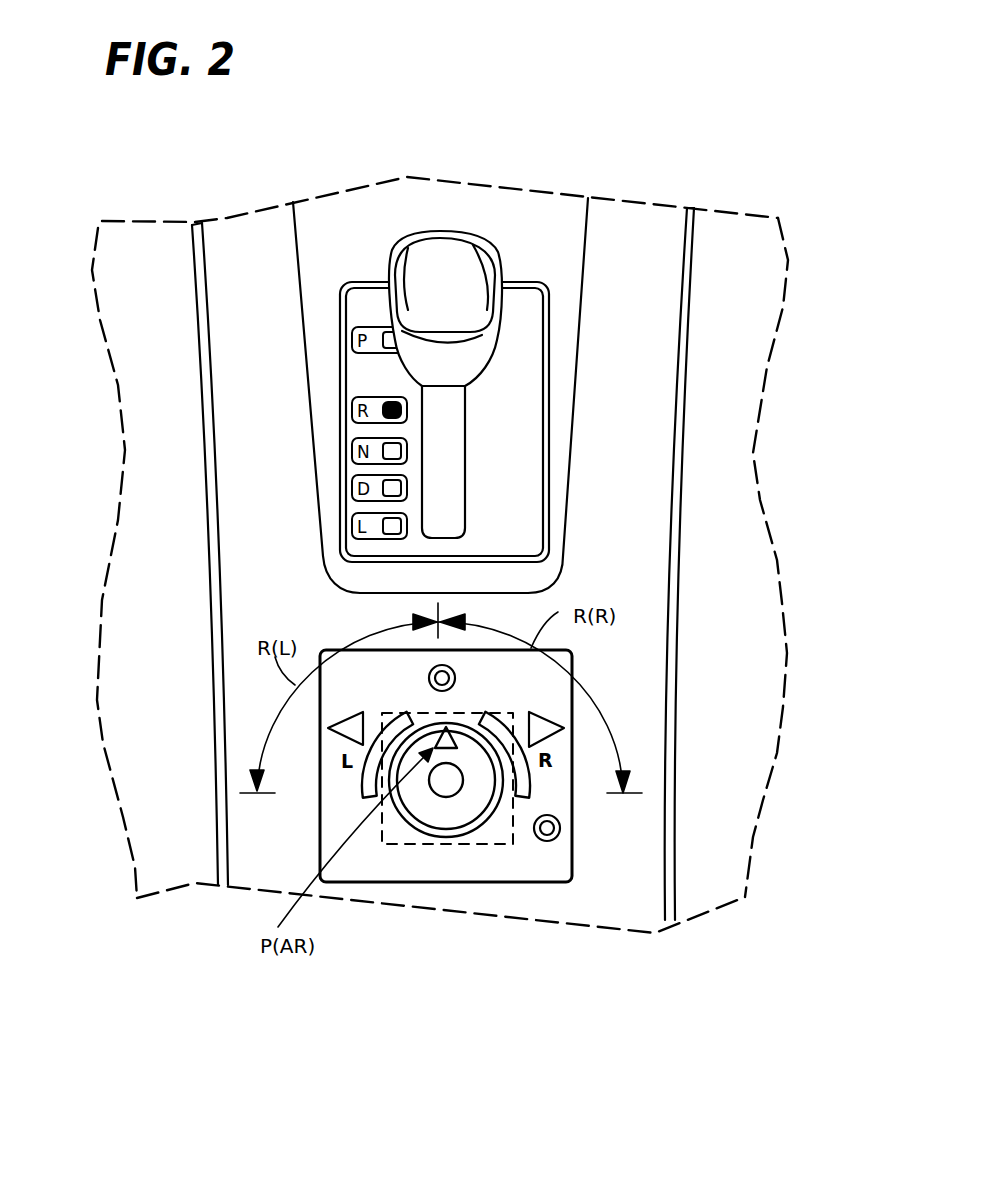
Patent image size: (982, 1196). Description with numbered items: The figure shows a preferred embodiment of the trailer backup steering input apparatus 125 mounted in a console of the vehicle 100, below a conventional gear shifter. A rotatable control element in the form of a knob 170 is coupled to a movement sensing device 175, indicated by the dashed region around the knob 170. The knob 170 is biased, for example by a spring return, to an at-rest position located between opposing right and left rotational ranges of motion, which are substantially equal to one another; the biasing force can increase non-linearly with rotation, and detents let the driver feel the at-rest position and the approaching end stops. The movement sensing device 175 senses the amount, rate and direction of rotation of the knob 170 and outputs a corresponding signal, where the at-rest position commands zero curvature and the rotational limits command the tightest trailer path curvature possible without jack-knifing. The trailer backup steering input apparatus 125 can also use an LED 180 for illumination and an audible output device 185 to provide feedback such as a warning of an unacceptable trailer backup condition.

The vehicle 100 is at (568, 128).
The trailer backup steering input apparatus 125 is at (497, 883).
The knob 170 is at (447, 812).
The movement sensing device 175 is at (400, 847).
The LED 180 is at (456, 678).
The audible output device 185 is at (560, 833).